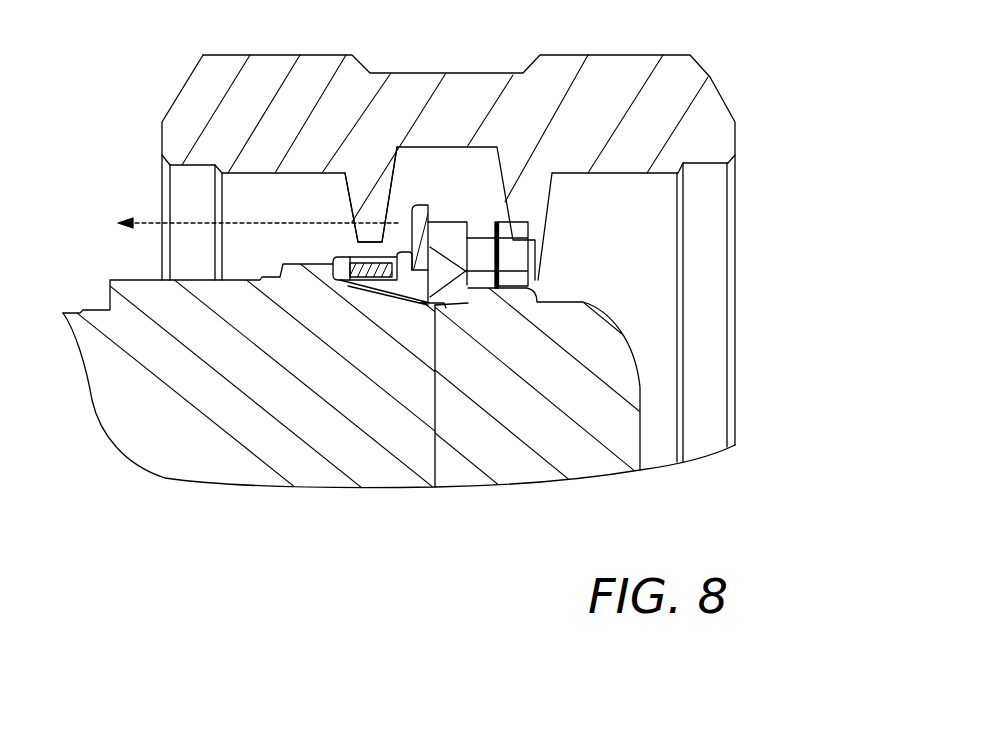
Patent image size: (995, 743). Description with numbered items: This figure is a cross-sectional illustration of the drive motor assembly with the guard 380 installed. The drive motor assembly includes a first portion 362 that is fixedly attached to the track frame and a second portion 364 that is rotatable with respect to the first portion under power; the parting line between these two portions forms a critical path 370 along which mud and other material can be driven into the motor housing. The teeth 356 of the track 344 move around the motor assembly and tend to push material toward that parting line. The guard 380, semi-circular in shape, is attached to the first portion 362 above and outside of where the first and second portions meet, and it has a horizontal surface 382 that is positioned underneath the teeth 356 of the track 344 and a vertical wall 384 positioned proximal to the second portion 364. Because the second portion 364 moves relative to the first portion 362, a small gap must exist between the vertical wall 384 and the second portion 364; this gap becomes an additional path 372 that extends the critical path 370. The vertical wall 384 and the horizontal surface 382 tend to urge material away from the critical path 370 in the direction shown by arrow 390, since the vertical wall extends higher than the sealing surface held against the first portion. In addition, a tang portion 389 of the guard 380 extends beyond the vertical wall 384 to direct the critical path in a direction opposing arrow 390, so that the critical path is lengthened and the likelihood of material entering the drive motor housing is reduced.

The track 344 is at (448, 262).
The teeth 356 is at (373, 213).
The first portion 362 is at (335, 375).
The second portion 364 is at (536, 390).
The critical path 370 is at (430, 298).
The path 372 is at (443, 222).
The guard 380 is at (348, 283).
The horizontal surface 382 is at (403, 293).
The vertical wall 384 is at (430, 248).
The tang portion 389 is at (420, 207).
The arrow 390 is at (148, 221).